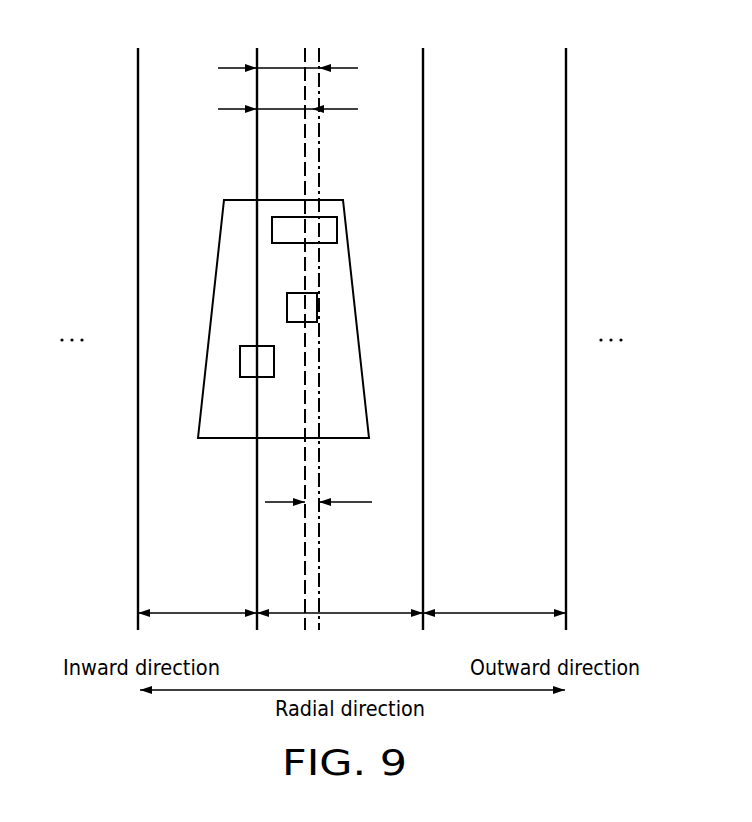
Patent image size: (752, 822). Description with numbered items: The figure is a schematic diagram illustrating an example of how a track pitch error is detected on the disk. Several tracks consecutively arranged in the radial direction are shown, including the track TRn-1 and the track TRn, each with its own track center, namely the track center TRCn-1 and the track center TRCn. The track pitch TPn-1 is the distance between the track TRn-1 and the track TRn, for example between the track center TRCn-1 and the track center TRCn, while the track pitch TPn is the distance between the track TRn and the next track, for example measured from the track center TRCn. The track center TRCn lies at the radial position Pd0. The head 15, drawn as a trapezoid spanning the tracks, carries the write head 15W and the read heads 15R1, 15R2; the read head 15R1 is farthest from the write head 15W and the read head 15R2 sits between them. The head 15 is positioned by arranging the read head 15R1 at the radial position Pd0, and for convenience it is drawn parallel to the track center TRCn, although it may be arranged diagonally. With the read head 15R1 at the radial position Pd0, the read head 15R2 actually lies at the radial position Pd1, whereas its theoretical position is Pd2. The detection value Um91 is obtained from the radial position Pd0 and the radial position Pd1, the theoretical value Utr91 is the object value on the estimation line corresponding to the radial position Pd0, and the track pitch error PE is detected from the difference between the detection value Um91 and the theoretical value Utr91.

The head 15 is at (214, 278).
The write head 15W is at (327, 217).
The read head 15R1 is at (240, 357).
The read head 15R2 is at (320, 307).
The track pitch error PE is at (313, 500).
The theoretical value Utr91 is at (283, 66).
The detection value Um91 is at (280, 109).
The radial position Pd0 is at (257, 173).
The radial position Pd1 is at (305, 143).
The theoretical position Pd2 is at (320, 140).
The track TRn-1 is at (136, 323).
The track TRn is at (253, 323).
The track center TRCn-1 is at (138, 562).
The track center TRCn is at (257, 562).
The track pitch TPn-1 is at (197, 628).
The track pitch TPn is at (340, 628).